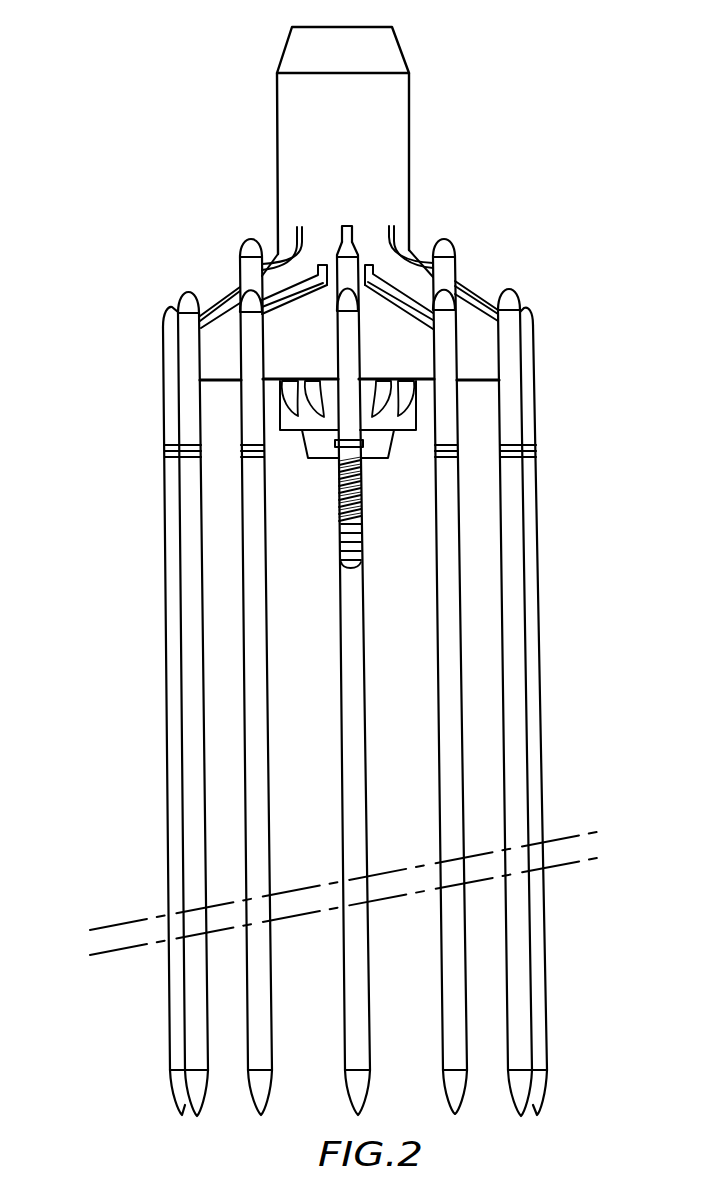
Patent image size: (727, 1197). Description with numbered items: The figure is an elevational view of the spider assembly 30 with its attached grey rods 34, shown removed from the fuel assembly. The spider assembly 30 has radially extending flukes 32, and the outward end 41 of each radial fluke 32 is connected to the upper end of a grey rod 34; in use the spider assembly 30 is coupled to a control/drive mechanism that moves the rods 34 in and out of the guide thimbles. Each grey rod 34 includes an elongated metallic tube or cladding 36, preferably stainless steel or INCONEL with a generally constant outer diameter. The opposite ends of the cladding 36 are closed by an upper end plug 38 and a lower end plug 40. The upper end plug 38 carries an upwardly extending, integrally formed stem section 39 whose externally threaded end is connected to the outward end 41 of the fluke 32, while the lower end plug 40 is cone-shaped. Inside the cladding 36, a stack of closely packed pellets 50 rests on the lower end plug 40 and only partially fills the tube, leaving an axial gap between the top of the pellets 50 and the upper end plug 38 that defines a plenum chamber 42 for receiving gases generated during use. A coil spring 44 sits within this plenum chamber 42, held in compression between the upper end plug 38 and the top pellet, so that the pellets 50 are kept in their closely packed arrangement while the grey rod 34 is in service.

The spider assembly 30 is at (418, 157).
The radially extending fluke 32 is at (475, 295).
The grey rod 34 is at (145, 589).
The cladding 36 is at (266, 682).
The upper end plug 38 is at (362, 452).
The stem section 39 is at (342, 407).
The lower end plug 40 is at (366, 1093).
The outward end 41 is at (168, 357).
The plenum chamber 42 is at (366, 528).
The coil spring 44 is at (340, 487).
The pellets 50 is at (345, 541).